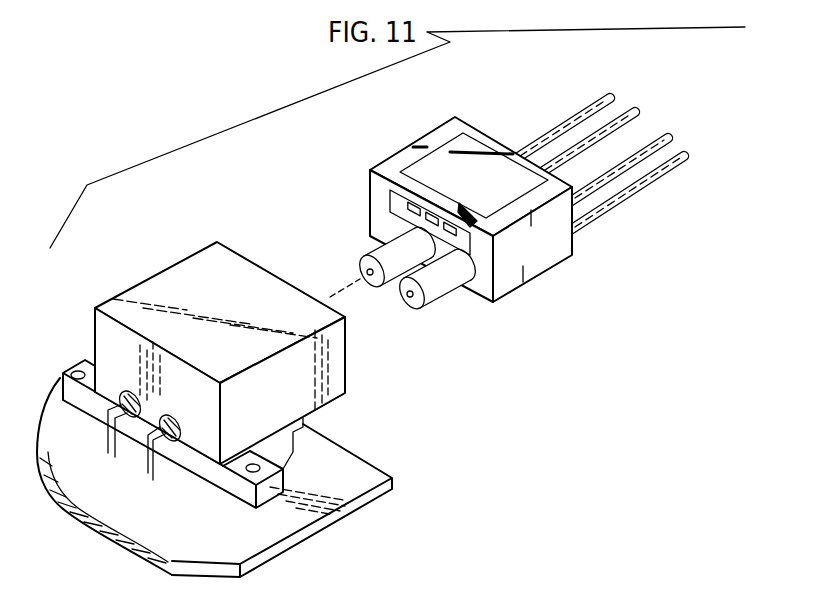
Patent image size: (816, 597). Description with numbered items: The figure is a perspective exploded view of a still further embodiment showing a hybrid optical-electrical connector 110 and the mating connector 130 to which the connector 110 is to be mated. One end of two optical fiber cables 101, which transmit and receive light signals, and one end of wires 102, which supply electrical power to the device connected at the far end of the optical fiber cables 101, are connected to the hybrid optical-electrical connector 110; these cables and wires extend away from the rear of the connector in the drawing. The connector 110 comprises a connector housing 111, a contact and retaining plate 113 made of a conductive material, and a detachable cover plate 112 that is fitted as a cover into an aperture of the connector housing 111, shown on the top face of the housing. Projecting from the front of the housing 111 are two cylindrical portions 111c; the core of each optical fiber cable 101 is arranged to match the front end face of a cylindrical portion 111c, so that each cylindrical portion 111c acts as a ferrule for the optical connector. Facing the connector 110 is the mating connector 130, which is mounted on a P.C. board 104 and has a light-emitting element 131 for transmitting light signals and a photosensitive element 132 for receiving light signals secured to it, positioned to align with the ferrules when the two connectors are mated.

The optical fiber cables 101 is at (656, 130).
The wires 102 is at (553, 124).
The P.C. board 104 is at (360, 481).
The hybrid optical-electrical connector 110 is at (505, 217).
The connector housing 111 is at (558, 257).
The cylindrical portion 111c is at (383, 290).
The detachable cover plate 112 is at (463, 167).
The contact and retaining plate 113 is at (418, 234).
The mating connector 130 is at (193, 238).
The light-emitting element 131 is at (163, 447).
The photosensitive element 132 is at (128, 436).